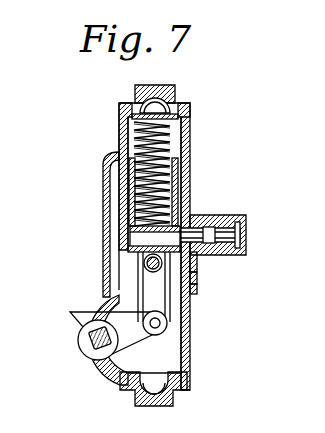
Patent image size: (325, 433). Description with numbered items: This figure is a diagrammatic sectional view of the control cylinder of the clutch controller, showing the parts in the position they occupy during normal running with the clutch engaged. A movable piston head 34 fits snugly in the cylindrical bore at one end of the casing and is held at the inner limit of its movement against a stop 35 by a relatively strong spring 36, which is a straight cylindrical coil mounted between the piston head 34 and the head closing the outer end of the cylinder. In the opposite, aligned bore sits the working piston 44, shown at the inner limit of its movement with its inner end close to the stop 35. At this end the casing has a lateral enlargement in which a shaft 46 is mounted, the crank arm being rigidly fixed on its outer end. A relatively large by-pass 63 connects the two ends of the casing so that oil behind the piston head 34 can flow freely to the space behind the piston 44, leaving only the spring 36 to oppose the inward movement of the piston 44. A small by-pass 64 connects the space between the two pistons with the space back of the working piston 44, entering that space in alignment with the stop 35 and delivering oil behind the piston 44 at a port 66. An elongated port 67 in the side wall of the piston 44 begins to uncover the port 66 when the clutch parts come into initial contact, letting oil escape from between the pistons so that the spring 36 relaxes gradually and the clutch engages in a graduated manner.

The piston head 34 is at (187, 212).
The stop 35 is at (128, 236).
The spring 36 is at (170, 196).
The piston 44 is at (128, 255).
The shaft 46 is at (85, 337).
The by-pass 63 is at (112, 199).
The small by-pass 64 is at (195, 266).
The port 66 is at (196, 283).
The elongated port 67 is at (194, 290).